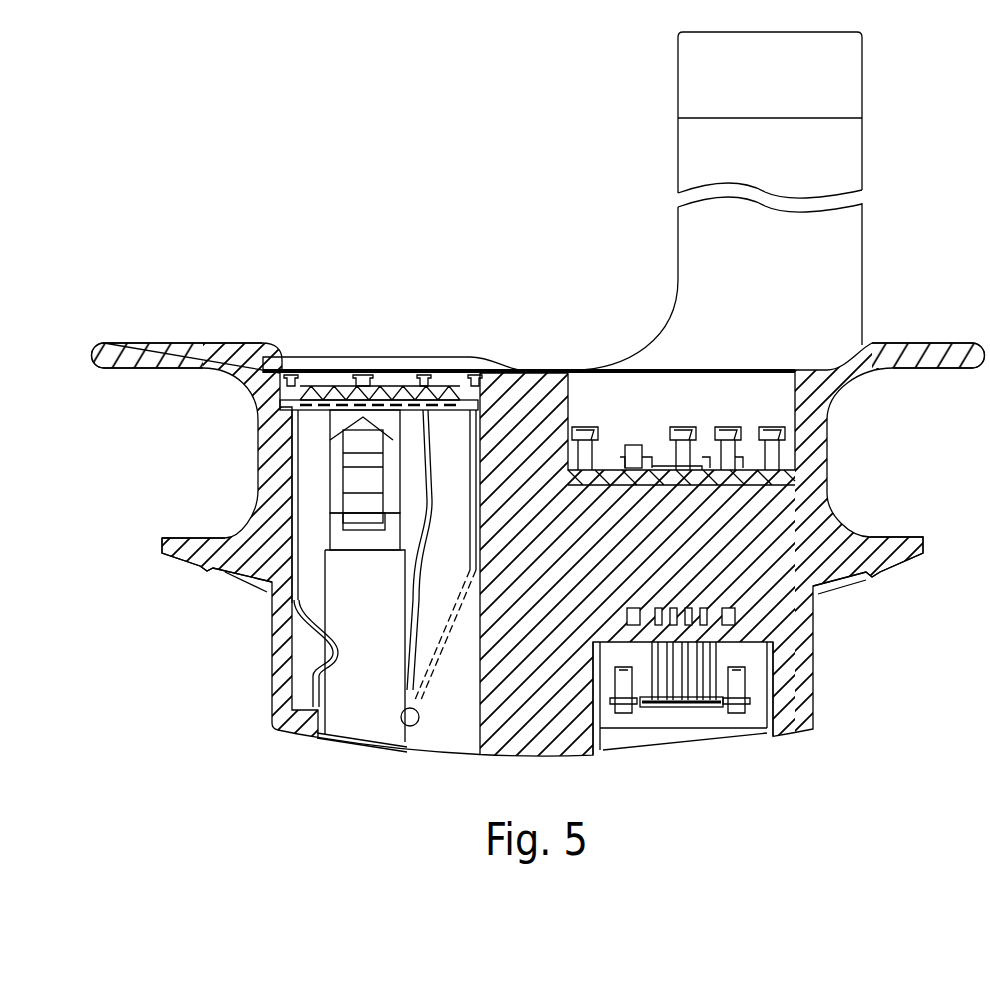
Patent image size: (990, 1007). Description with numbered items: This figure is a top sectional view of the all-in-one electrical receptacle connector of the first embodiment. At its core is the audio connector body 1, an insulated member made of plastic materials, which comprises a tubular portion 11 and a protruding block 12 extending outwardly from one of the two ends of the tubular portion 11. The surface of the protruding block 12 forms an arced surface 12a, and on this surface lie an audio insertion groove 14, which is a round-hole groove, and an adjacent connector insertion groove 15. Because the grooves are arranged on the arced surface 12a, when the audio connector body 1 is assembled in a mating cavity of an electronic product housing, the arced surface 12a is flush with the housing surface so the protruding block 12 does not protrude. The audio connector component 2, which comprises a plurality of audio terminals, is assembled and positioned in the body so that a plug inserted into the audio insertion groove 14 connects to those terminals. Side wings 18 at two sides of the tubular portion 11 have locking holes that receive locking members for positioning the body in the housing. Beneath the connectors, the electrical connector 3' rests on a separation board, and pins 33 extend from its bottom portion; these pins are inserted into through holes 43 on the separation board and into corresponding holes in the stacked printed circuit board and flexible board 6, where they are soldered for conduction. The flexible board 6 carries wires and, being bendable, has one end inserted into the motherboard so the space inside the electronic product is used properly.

The audio connector body 1 is at (146, 540).
The audio connector component 2 is at (388, 370).
The electrical connector 3' is at (680, 710).
The flexible board 6 is at (833, 160).
The tubular portion 11 is at (893, 556).
The protruding block 12 is at (272, 656).
The arced surface 12a is at (793, 732).
The audio insertion groove 14 is at (358, 734).
The connector insertion groove 15 is at (625, 745).
The side wings 18 is at (142, 357).
The pins 33 is at (586, 445).
The through holes 43 is at (684, 440).